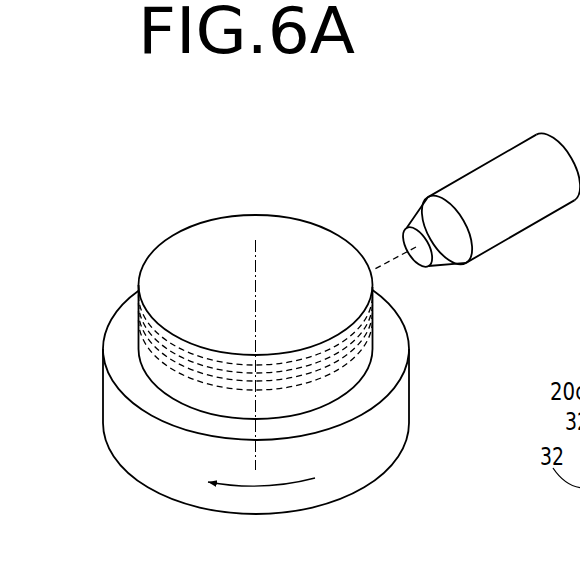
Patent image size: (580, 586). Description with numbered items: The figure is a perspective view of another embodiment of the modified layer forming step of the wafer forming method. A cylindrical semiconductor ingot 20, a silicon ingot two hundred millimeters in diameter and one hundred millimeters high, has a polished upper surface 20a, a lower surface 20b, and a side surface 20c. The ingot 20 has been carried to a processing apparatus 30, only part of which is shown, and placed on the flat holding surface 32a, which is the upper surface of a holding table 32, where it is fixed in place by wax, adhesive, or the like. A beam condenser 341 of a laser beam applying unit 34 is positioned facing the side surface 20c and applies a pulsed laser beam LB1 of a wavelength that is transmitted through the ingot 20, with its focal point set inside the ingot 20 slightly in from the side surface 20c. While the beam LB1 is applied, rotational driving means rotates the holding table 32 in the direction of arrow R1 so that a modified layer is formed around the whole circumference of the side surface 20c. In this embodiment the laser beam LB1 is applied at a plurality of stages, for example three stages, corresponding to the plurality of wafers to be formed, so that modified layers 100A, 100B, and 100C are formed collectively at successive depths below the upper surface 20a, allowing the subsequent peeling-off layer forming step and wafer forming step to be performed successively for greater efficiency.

The processing apparatus 30 is at (124, 183).
The semiconductor ingot 20 is at (206, 212).
The upper surface 20a is at (182, 250).
The lower surface 20b is at (333, 407).
The side surface 20c is at (148, 350).
The holding table 32 is at (418, 377).
The holding surface 32a is at (390, 348).
The laser beam applying unit 34 is at (451, 160).
The beam condenser 341 is at (505, 175).
The pulsed laser beam LB1 is at (388, 262).
The modified layer 100A is at (286, 361).
The modified layer 100B is at (240, 377).
The modified layer 100C is at (352, 365).
The rotation direction arrow R1 is at (275, 482).